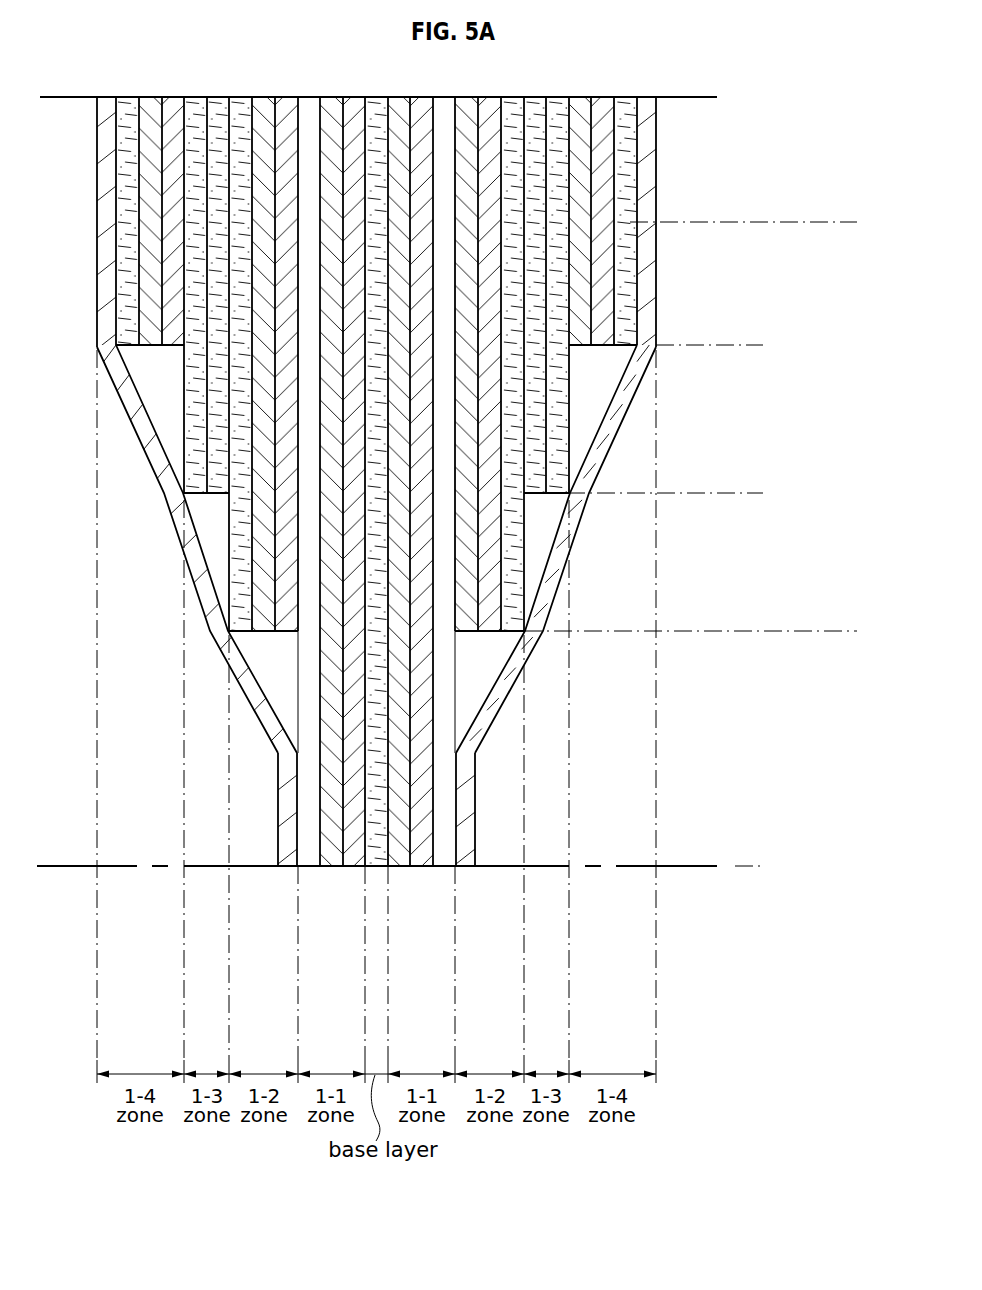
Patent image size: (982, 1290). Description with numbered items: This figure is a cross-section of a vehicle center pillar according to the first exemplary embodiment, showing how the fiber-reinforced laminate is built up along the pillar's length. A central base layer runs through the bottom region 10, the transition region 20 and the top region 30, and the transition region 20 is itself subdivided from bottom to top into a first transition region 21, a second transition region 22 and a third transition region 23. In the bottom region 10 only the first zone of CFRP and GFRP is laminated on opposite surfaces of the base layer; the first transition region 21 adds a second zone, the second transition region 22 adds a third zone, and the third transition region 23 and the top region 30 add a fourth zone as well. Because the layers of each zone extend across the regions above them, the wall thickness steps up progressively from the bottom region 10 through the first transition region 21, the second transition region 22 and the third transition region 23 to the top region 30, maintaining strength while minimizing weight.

The bottom region 10 is at (757, 631).
The transition region 20 is at (847, 222).
The first transition region 21 is at (757, 493).
The second transition region 22 is at (757, 345).
The third transition region 23 is at (757, 222).
The top region 30 is at (757, 97).